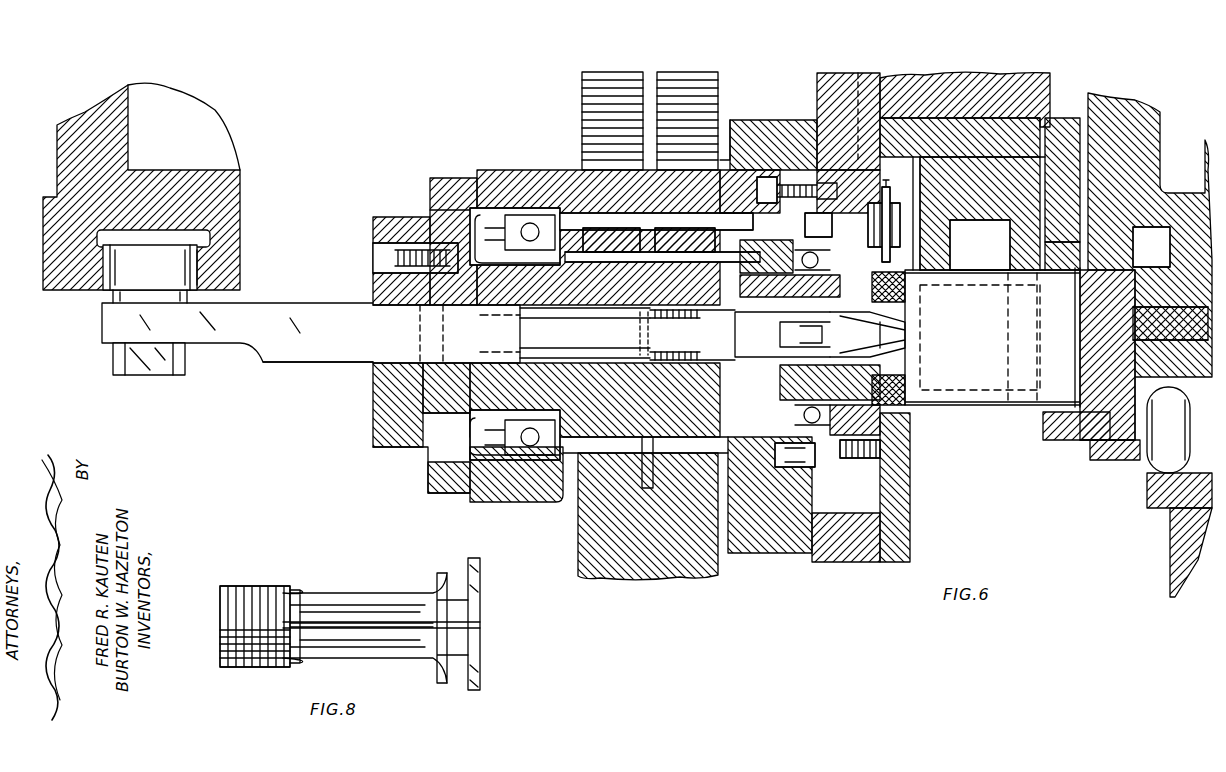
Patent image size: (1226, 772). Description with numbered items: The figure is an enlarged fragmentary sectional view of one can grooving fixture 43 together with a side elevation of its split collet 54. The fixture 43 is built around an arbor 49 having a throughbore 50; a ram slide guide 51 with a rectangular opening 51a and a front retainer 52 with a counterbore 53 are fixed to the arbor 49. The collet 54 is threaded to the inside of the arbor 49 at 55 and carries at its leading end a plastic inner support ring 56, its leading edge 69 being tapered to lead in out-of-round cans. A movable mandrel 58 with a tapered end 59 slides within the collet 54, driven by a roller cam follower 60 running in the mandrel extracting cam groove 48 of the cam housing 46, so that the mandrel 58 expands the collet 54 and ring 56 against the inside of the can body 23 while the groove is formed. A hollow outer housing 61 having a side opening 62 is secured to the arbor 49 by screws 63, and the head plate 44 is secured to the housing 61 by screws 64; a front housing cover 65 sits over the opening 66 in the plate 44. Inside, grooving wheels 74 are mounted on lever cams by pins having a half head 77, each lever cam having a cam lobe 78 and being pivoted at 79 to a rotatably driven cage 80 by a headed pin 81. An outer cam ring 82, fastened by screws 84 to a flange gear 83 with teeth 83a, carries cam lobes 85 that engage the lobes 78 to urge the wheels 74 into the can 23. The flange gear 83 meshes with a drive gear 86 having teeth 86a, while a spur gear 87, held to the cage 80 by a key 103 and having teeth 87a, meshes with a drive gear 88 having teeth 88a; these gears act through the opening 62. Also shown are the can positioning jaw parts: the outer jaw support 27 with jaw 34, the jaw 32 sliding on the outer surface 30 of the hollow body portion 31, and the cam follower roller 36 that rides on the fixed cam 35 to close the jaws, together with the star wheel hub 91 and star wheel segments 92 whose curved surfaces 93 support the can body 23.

In FIG. 6, the can body 23 is at (985, 405).
In FIG. 6, the outer jaw support 27 is at (1110, 362).
In FIG. 6, the outer surface 30 is at (1170, 268).
In FIG. 6, the hollow body portion 31 is at (1150, 112).
In FIG. 6, the semi-cylindrical cup or jaw 32 is at (1058, 242).
In FIG. 6, the semi-cylindrical cup or jaw 34 is at (1058, 440).
In FIG. 6, the fixed cam 35 is at (1160, 505).
In FIG. 6, the cam follower roller 36 is at (1165, 455).
In FIG. 6, the can grooving fixture 43 is at (438, 140).
In FIG. 6, the head plate 44 is at (860, 73).
In FIG. 6, the cam housing 46 is at (210, 135).
In FIG. 6, the mandrel extracting cam groove 48 is at (200, 258).
In FIG. 6, the arbor 49 is at (398, 217).
In FIG. 6, the throughbore 50 is at (496, 310).
In FIG. 6, the ram slide guide 51 is at (373, 385).
In FIG. 6, the rectangular opening 51a is at (372, 305).
In FIG. 6, the front retainer 52 is at (880, 440).
In FIG. 6, the counterbore 53 is at (888, 338).
In FIG. 6, the split collet 54 is at (900, 302).
In FIG. 8, the split collet 54 is at (465, 615).
In FIG. 6, the collet threads 55 is at (670, 312).
In FIG. 8, the collet threads 55 is at (240, 590).
In FIG. 6, the plastic inner support ring 56 is at (900, 385).
In FIG. 6, the movable mandrel 58 is at (616, 344).
In FIG. 6, the tapered end 59 is at (872, 340).
In FIG. 6, the roller cam follower 60 is at (156, 276).
In FIG. 6, the hollow outer housing 61 is at (535, 170).
In FIG. 6, the side opening 62 is at (565, 505).
In FIG. 6, the screws 63 is at (458, 178).
In FIG. 6, the screws 64 is at (786, 120).
In FIG. 6, the front housing cover 65 is at (910, 490).
In FIG. 6, the opening 66 is at (852, 530).
In FIG. 8, the leading edge 69 is at (480, 642).
In FIG. 6, the grooving wheel 74 is at (907, 193).
In FIG. 6, the half head 77 is at (814, 241).
In FIG. 6, the cam lobe 78 is at (888, 180).
In FIG. 6, the pivot end 79 is at (878, 455).
In FIG. 6, the cage 80 is at (748, 400).
In FIG. 6, the headed pin 81 is at (805, 465).
In FIG. 6, the outer cam ring 82 is at (847, 120).
In FIG. 6, the flange gear 83 is at (740, 248).
In FIG. 6, the gear teeth 83a is at (692, 222).
In FIG. 6, the screws 84 is at (766, 177).
In FIG. 6, the cam lobes 85 is at (876, 203).
In FIG. 6, the drive gear 86 is at (718, 88).
In FIG. 6, the gear teeth 86a is at (685, 72).
In FIG. 6, the spur gear 87 is at (612, 258).
In FIG. 6, the teeth 87a is at (620, 222).
In FIG. 6, the drive gear 88 is at (582, 86).
In FIG. 6, the teeth 88a is at (612, 72).
In FIG. 6, the star wheel hub 91 is at (960, 74).
In FIG. 6, the star wheel segments 92 is at (1045, 210).
In FIG. 6, the can supporting surfaces 93 is at (1022, 275).
In FIG. 6, the key 103 is at (580, 310).